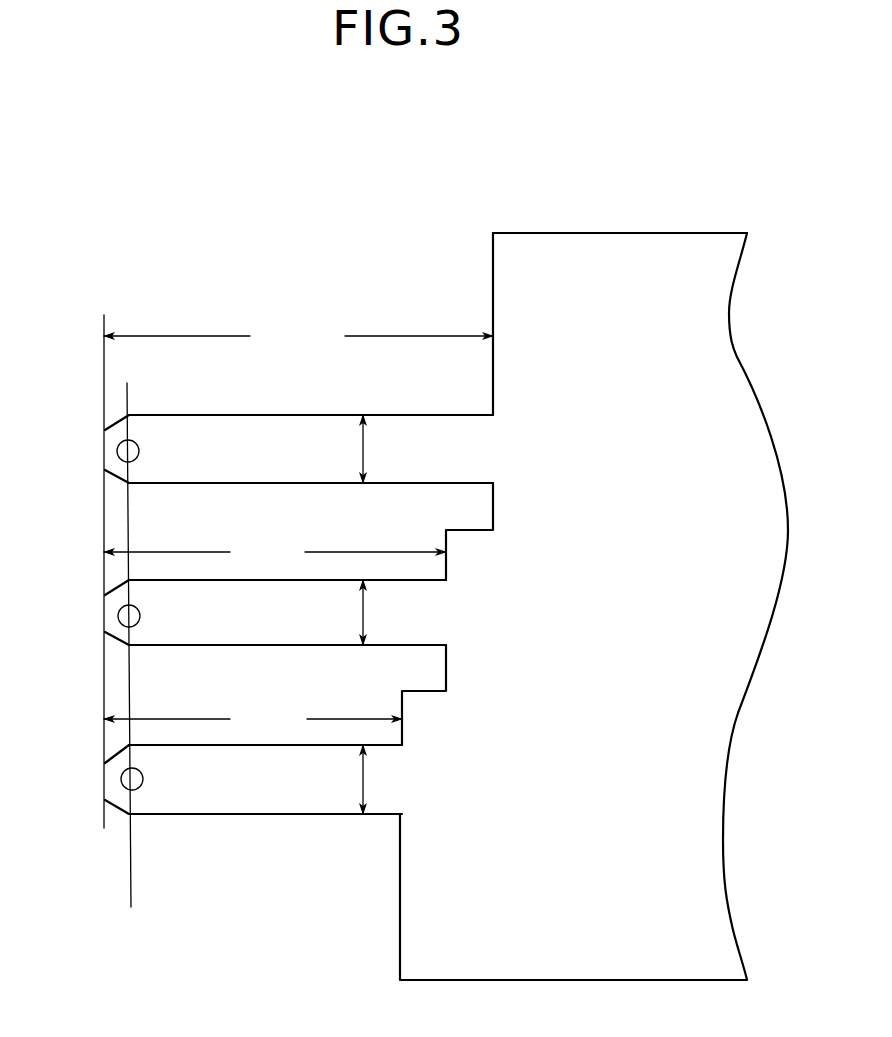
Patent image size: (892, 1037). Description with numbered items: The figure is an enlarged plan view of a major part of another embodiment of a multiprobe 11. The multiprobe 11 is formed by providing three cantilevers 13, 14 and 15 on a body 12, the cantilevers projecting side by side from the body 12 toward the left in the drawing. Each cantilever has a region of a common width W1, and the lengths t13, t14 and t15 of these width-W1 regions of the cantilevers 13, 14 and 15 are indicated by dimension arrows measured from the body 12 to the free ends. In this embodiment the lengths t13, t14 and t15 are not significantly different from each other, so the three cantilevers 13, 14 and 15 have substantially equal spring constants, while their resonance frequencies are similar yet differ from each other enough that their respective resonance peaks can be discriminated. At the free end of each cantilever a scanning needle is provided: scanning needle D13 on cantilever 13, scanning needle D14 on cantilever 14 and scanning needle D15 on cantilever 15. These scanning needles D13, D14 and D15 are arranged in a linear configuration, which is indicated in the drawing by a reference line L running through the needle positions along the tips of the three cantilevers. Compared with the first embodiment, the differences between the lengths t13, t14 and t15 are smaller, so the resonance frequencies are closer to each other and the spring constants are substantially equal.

The multiprobe 11 is at (722, 218).
The body 12 is at (578, 243).
The cantilever 13 is at (273, 428).
The cantilever 14 is at (286, 628).
The cantilever 15 is at (284, 790).
The scanning needle D13 is at (117, 451).
The scanning needle D14 is at (118, 616).
The scanning needle D15 is at (121, 779).
The reference line L is at (131, 890).
The length of region having width W1 of cantilever 13 t13 is at (298, 338).
The length of region having width W1 of cantilever 14 t14 is at (275, 554).
The length of region having width W1 of cantilever 15 t15 is at (253, 721).
The width W1 is at (363, 452).